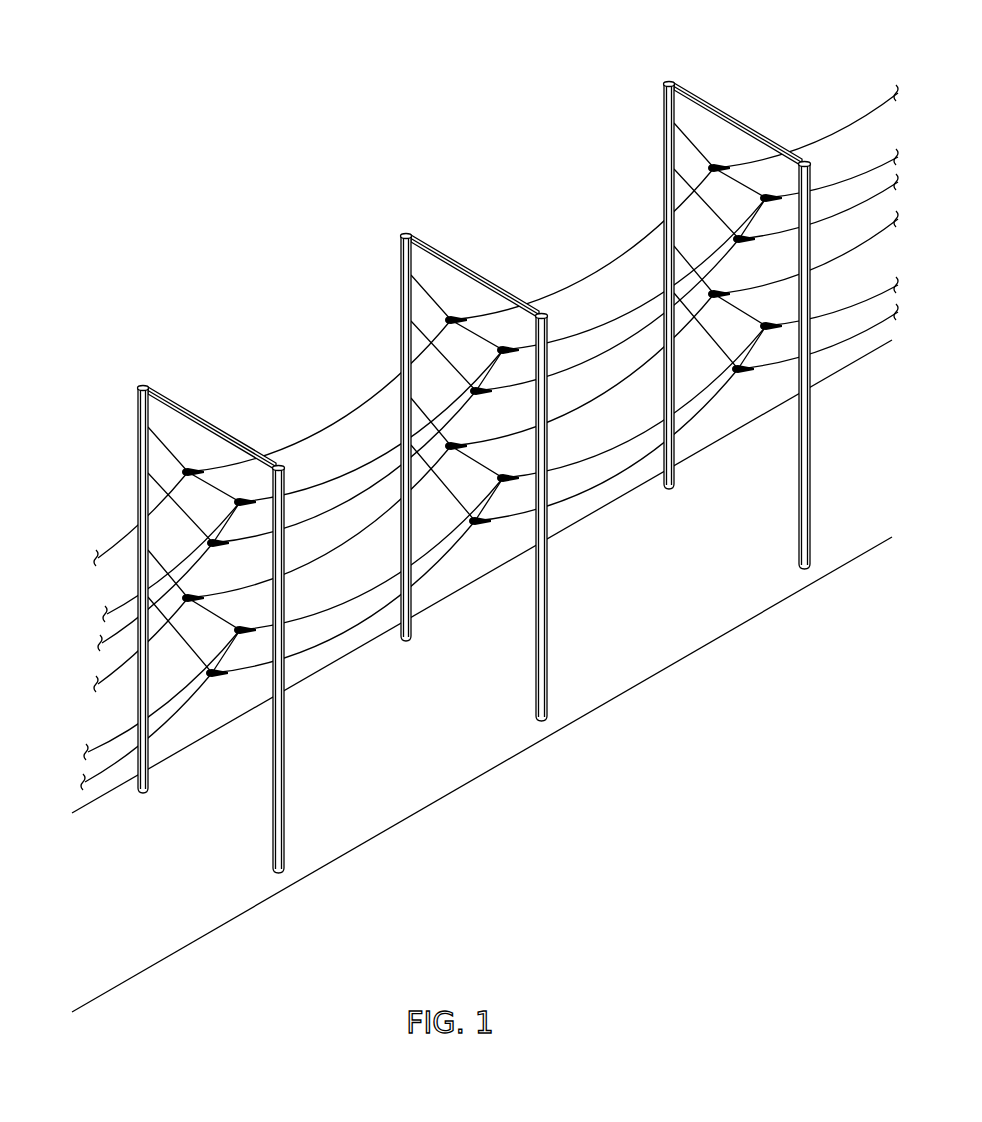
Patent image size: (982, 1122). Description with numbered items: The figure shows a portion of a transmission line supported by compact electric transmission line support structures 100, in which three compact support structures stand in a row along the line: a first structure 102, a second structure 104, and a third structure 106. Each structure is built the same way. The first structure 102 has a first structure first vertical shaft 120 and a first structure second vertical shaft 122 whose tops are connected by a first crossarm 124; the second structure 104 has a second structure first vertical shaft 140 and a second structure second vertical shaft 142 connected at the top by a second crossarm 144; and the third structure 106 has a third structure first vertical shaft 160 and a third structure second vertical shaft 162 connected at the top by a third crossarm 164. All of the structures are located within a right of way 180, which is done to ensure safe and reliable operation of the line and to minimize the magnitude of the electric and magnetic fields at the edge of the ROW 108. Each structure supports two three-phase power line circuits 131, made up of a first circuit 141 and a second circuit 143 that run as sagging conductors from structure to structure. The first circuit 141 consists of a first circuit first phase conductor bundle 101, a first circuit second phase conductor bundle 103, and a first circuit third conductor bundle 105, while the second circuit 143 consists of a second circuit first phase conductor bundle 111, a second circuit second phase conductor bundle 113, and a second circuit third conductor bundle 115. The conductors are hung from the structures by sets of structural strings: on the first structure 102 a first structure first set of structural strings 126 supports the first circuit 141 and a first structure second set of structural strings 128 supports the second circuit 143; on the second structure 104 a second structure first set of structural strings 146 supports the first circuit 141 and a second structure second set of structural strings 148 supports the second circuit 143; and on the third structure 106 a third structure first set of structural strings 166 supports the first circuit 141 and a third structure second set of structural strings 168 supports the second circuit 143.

The portion of a transmission line supported by compact electric transmission line s 100 is at (490, 520).
The first circuit first phase conductor bundle 101 is at (98, 562).
The first structure 102 is at (210, 595).
The first circuit second phase conductor bundle 103 is at (107, 617).
The second structure 104 is at (471, 445).
The first circuit third conductor bundle 105 is at (102, 647).
The third structure 106 is at (736, 292).
The edge of the ROW 108 is at (478, 790).
The second circuit first phase conductor bundle 111 is at (98, 683).
The second circuit second phase conductor bundle 113 is at (88, 750).
The second circuit third conductor bundle 115 is at (112, 769).
The first structure first vertical shaft 120 is at (149, 783).
The first structure second vertical shaft 122 is at (285, 795).
The first crossarm 124 is at (238, 440).
The first structure first set of structural strings 126 is at (156, 452).
The first structure second set of structural strings 128 is at (156, 572).
The two three-phase power line circuits 131 is at (307, 292).
The second structure first vertical shaft 140 is at (412, 632).
The first circuit 141 is at (56, 608).
The second structure second vertical shaft 142 is at (548, 652).
The second circuit 143 is at (62, 882).
The second crossarm 144 is at (502, 290).
The second structure first set of structural strings 146 is at (419, 300).
The second structure second set of structural strings 148 is at (420, 421).
The third structure first vertical shaft 160 is at (675, 478).
The third structure second vertical shaft 162 is at (811, 494).
The third crossarm 164 is at (766, 138).
The third structure first set of structural strings 166 is at (682, 149).
The third structure second set of structural strings 168 is at (682, 269).
The right of way 180 is at (369, 742).